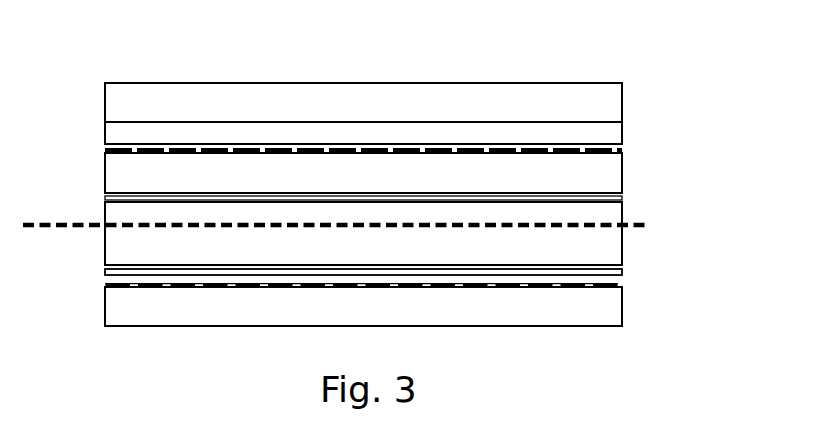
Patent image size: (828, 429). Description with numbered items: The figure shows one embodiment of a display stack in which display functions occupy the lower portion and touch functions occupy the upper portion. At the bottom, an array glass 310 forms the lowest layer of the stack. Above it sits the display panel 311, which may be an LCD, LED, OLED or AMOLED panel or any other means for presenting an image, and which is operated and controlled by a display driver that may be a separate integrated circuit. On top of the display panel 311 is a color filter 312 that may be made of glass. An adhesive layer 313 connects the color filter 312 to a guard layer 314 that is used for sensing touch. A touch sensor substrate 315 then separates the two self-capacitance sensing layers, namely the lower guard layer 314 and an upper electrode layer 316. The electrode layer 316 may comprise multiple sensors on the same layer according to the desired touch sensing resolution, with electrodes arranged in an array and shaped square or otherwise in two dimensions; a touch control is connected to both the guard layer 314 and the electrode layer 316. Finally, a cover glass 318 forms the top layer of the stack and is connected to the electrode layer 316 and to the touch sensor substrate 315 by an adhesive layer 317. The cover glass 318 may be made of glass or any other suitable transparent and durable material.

The array glass 310 is at (622, 310).
The display panel 311 is at (618, 283).
The color filter 312 is at (622, 251).
The adhesive layer 313 is at (622, 212).
The guard layer 314 is at (622, 196).
The touch sensor substrate 315 is at (622, 170).
The electrode layer 316 is at (622, 147).
The adhesive layer 317 is at (622, 128).
The cover glass 318 is at (622, 83).